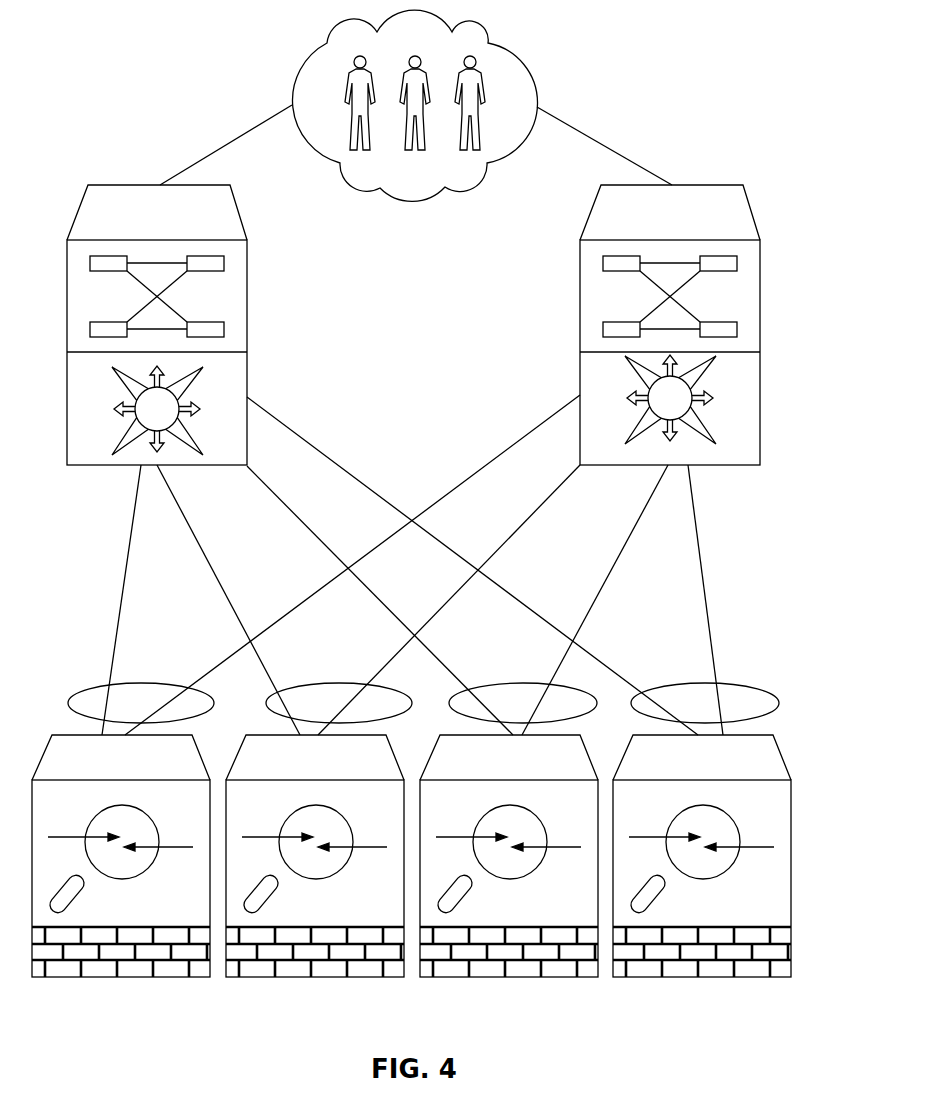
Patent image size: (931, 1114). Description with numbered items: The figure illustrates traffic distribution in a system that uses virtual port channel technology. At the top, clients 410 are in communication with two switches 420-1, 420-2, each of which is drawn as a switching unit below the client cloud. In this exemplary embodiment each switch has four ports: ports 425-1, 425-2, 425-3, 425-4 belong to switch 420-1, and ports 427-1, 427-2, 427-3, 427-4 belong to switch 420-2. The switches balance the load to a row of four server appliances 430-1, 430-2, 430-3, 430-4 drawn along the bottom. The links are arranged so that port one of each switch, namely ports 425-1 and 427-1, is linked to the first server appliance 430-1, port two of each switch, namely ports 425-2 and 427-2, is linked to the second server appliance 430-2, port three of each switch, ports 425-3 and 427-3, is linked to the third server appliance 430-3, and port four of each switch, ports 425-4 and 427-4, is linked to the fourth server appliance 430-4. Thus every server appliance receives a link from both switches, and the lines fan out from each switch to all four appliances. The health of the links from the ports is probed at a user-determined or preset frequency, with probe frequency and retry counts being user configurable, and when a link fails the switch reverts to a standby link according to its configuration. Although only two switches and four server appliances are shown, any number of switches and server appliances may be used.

The clients 410 is at (506, 54).
The switch 420-1 is at (247, 278).
The switch 420-2 is at (580, 278).
The port 425-1 is at (122, 605).
The port 425-2 is at (222, 578).
The port 425-3 is at (298, 517).
The port 425-4 is at (297, 428).
The port 427-1 is at (530, 430).
The port 427-2 is at (523, 523).
The port 427-3 is at (605, 580).
The port 427-4 is at (712, 640).
The server appliance 430-1 is at (167, 978).
The server appliance 430-2 is at (361, 978).
The server appliance 430-3 is at (554, 978).
The server appliance 430-4 is at (747, 978).